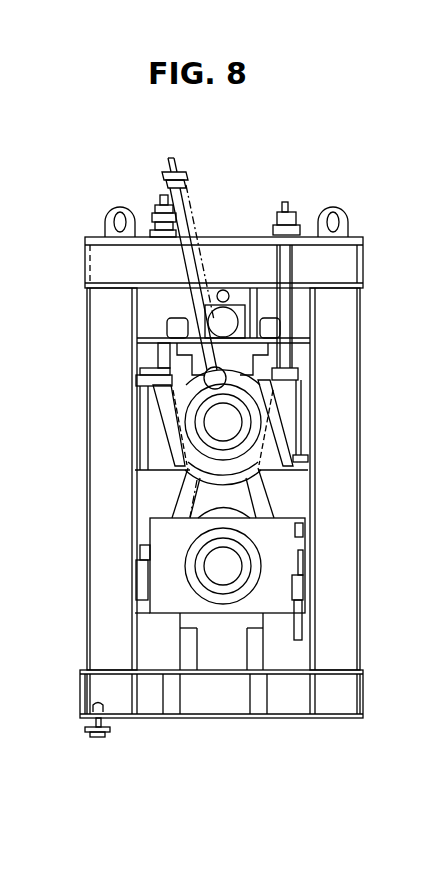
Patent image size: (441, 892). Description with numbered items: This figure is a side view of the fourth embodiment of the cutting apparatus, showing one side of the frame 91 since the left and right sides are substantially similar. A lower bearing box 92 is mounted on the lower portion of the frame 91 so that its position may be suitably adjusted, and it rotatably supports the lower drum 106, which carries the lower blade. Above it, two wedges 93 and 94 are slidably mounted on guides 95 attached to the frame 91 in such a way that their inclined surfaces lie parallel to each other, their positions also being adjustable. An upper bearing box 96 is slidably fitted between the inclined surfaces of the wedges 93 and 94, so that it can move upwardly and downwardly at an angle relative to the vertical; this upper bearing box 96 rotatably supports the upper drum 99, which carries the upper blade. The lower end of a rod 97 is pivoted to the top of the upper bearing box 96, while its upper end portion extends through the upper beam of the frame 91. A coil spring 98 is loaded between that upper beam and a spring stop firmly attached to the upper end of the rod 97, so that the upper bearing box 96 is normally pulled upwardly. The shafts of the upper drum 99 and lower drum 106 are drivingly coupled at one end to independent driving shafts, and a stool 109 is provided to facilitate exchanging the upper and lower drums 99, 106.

The frame 91 is at (340, 322).
The lower bearing box 92 is at (280, 550).
The wedge 93 is at (163, 460).
The wedge 94 is at (282, 388).
The guides 95 is at (140, 428).
The upper bearing box 96 is at (250, 460).
The rod 97 is at (222, 242).
The coil spring 98 is at (190, 192).
The upper drum 99 is at (168, 378).
The lower drum 106 is at (217, 617).
The stool 109 is at (190, 480).